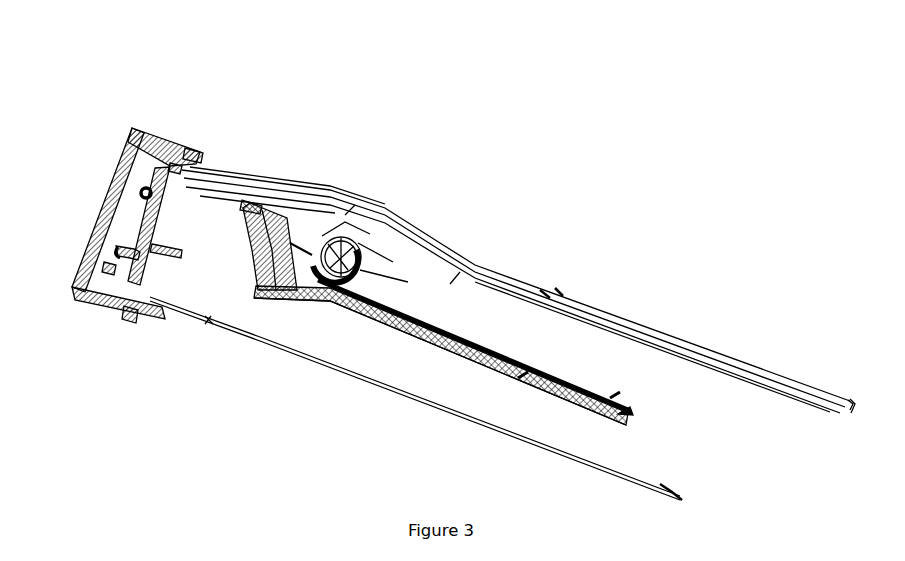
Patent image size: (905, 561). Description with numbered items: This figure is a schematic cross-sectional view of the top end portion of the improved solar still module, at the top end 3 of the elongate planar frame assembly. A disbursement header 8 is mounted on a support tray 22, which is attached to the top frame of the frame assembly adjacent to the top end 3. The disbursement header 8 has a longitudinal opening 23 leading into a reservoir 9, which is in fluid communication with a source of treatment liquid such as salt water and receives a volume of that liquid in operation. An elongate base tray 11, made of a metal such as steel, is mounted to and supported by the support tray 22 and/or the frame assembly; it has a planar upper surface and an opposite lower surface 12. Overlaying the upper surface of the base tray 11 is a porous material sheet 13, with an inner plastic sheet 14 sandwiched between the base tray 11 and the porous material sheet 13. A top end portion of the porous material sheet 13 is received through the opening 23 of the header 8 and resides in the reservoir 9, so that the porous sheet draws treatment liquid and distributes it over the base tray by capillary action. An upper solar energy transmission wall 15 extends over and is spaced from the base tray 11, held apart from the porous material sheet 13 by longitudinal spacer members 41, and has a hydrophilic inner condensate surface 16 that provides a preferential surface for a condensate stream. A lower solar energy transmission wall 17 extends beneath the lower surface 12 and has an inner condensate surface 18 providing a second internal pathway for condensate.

The top end 3 is at (80, 162).
The longitudinal spacer members 41 is at (240, 180).
The support tray 22 is at (297, 183).
The upper solar energy transmission wall 15 is at (647, 330).
The inner condensate surface 16 is at (846, 405).
The longitudinal opening 23 is at (320, 250).
The reservoir 9 is at (370, 270).
The disbursement header 8 is at (405, 236).
The porous material sheet 13 is at (507, 345).
The inner plastic sheet 14 is at (590, 393).
The base tray 11 is at (640, 404).
The lower surface 12 is at (395, 328).
The lower solar energy transmission wall 17 is at (560, 453).
The inner condensate surface 18 is at (663, 487).